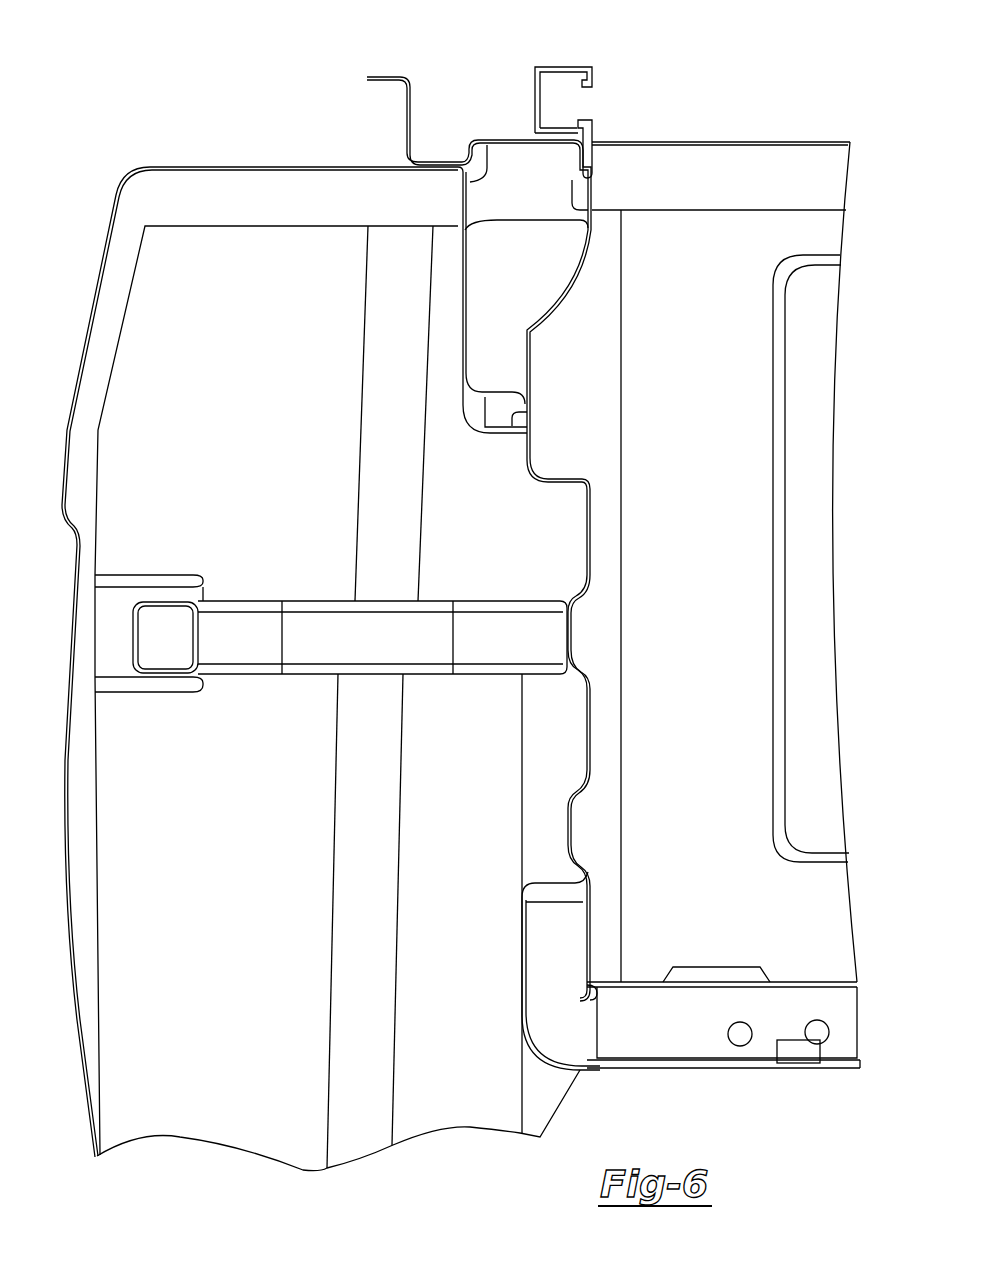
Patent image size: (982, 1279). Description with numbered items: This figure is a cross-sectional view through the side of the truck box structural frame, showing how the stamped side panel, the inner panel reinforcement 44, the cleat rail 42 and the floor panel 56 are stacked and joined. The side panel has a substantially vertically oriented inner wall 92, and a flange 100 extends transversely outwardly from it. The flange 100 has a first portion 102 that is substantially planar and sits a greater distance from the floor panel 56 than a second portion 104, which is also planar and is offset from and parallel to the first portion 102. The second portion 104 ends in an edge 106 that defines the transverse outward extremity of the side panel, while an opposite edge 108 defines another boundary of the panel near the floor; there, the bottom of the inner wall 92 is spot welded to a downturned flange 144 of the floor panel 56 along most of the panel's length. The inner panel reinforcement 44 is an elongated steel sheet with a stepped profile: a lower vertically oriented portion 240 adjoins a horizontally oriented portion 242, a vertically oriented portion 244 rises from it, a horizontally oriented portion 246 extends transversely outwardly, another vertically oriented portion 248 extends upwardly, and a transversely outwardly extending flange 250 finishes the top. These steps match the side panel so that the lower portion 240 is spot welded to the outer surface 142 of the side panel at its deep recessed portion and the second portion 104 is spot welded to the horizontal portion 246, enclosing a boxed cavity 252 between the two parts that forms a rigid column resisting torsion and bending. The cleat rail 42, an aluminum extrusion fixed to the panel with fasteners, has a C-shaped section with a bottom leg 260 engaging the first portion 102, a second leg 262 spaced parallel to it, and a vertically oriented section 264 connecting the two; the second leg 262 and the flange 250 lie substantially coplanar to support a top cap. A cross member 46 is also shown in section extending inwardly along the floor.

The cleat rail 42 is at (552, 93).
The inner panel reinforcement 44 is at (389, 91).
The cross member 46 is at (260, 690).
The floor panel 56 is at (640, 978).
The inner wall 92 is at (600, 925).
The flange 100 is at (484, 522).
The first portion 102 is at (505, 140).
The second portion 104 is at (447, 162).
The edge 106 is at (415, 163).
The opposite edge 108 is at (580, 1020).
The outer surface 142 is at (580, 945).
The downturned flange 144 is at (590, 992).
The lower vertically oriented portion 240 is at (515, 420).
The horizontally oriented portion 242 is at (485, 405).
The vertically oriented portion 244 is at (462, 325).
The horizontally oriented portion 246 is at (442, 168).
The vertically oriented portion 248 is at (408, 120).
The transversely outwardly extending flange 250 is at (385, 75).
The boxed cavity 252 is at (514, 283).
The bottom leg 260 is at (565, 127).
The second leg 262 is at (553, 67).
The vertically oriented section 264 is at (533, 68).